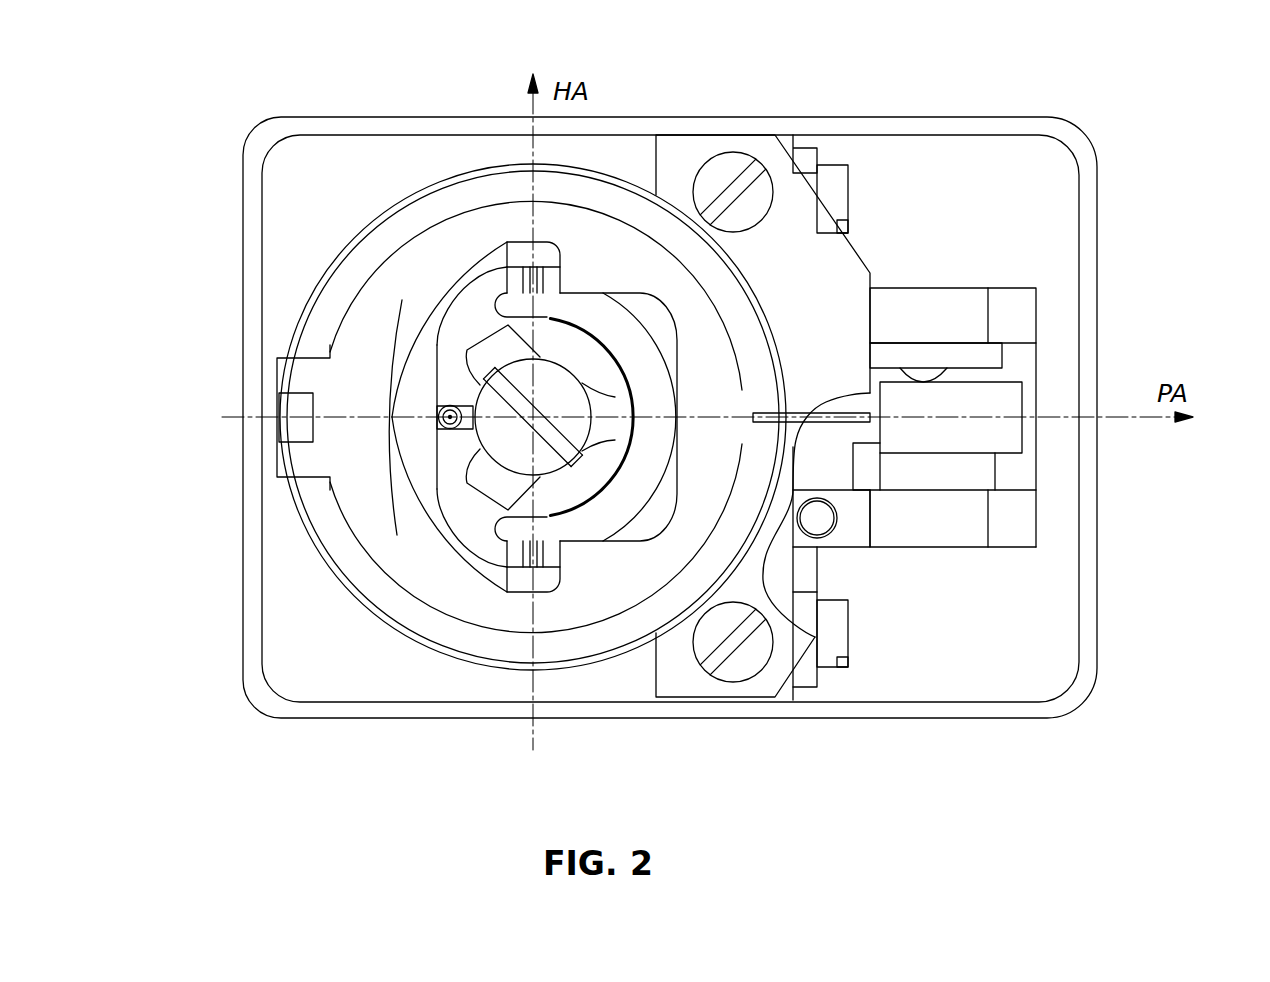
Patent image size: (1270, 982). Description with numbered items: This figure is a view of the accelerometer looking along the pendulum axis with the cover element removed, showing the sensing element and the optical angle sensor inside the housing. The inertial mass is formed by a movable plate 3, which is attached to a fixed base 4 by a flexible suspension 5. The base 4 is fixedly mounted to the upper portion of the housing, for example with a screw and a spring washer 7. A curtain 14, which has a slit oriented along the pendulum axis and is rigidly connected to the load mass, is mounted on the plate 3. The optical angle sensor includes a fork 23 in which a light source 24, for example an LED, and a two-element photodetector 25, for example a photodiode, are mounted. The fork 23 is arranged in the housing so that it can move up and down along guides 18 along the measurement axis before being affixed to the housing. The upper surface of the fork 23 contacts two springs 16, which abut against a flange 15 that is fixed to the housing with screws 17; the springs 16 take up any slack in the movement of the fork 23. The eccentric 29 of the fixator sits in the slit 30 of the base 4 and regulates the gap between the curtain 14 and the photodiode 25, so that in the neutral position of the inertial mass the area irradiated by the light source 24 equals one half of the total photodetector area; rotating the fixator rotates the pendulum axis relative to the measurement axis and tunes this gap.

The movable plate 3 is at (607, 268).
The fixed base 4 is at (483, 317).
The flexible suspension 5 is at (515, 278).
The spring washer 7 is at (492, 481).
The curtain 14 is at (1007, 432).
The flange 15 is at (850, 280).
The springs 16 is at (833, 528).
The screws 17 is at (733, 171).
The guides 18 is at (793, 565).
The fork 23 is at (960, 520).
The light source 24 is at (980, 357).
The two-element photodetector 25 is at (980, 470).
The eccentric 29 is at (473, 417).
The slit 30 is at (440, 411).